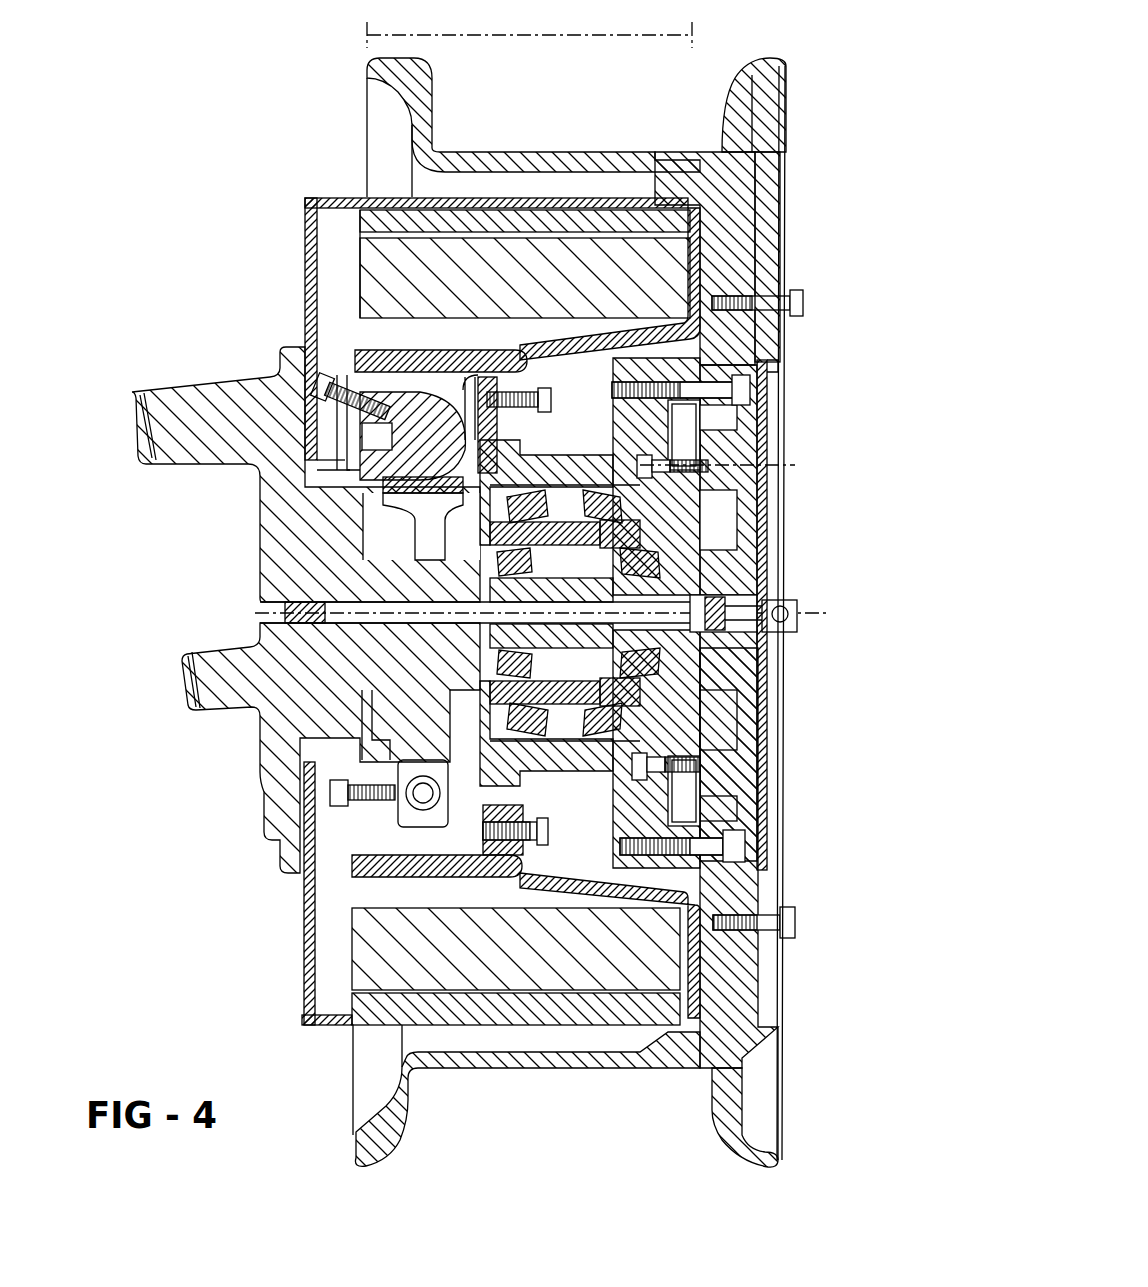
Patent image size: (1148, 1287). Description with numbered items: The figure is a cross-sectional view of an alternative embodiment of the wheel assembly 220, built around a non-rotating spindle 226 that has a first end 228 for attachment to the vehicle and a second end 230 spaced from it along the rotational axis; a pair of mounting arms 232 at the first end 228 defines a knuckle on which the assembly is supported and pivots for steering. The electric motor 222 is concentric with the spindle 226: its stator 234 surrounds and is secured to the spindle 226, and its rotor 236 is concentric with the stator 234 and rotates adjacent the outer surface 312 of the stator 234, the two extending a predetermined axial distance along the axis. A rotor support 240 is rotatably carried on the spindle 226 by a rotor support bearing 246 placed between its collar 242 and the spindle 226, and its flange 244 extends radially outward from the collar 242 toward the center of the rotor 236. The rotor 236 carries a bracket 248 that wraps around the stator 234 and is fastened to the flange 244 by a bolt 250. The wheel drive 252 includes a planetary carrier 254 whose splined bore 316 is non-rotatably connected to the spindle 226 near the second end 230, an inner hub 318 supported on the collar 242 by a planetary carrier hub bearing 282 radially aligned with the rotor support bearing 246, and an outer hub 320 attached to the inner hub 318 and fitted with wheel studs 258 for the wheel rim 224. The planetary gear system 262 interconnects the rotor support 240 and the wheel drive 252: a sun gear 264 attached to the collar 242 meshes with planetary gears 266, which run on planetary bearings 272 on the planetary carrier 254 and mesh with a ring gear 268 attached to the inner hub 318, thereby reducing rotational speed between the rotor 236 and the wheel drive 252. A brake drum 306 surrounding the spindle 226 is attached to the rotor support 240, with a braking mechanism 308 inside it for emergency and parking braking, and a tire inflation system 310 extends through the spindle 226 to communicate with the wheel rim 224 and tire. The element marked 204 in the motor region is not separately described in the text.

The electric motor assembly 204 is at (343, 876).
The wheel assembly 220 is at (788, 50).
The electric motor 222 is at (316, 200).
The wheel rim 224 is at (790, 78).
The spindle 226 is at (257, 512).
The first end 228 is at (257, 555).
The second end 230 is at (748, 590).
The mounting arms 232 is at (132, 414).
The stator 234 is at (352, 242).
The rotor 236 is at (390, 196).
The rotor support 240 is at (360, 362).
The collar 242 is at (466, 558).
The flange 244 is at (525, 468).
The rotor support bearing 246 is at (642, 565).
The bracket 248 is at (716, 225).
The bolt 250 is at (535, 395).
The wheel drive 252 is at (797, 382).
The planetary carrier 254 is at (743, 500).
The wheel studs 258 is at (797, 918).
The planetary gear system 262 is at (738, 742).
The sun gear 264 is at (647, 530).
The planetary gears 266 is at (697, 435).
The ring gear 268 is at (690, 400).
The planetary bearing 272 is at (712, 458).
The planetary carrier hub bearing 282 is at (690, 575).
The brake drum 306 is at (420, 350).
The braking mechanism 308 is at (378, 812).
The tire inflation system 310 is at (800, 613).
The outer surface 312 is at (405, 238).
The splined bore 316 is at (778, 680).
The inner hub 318 is at (640, 352).
The outer hub 320 is at (773, 357).